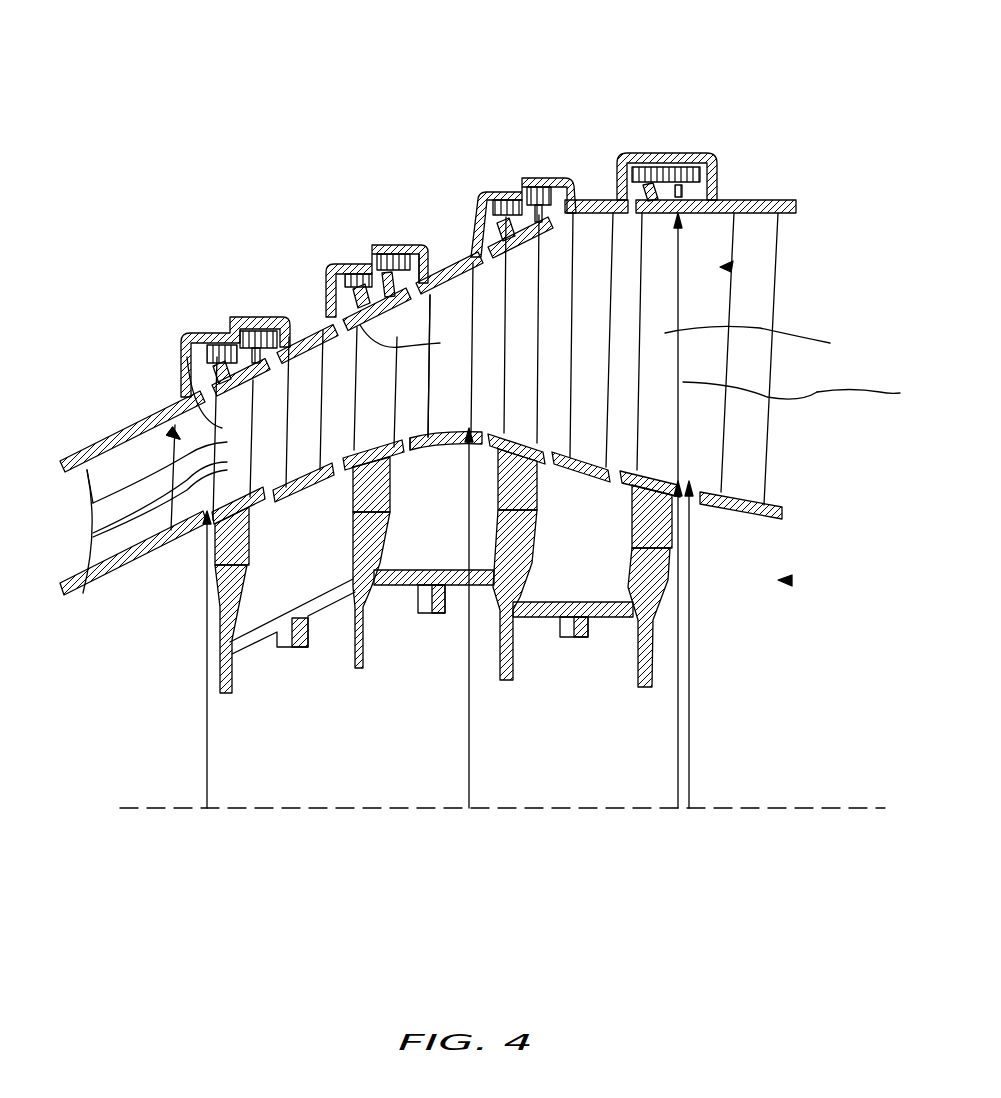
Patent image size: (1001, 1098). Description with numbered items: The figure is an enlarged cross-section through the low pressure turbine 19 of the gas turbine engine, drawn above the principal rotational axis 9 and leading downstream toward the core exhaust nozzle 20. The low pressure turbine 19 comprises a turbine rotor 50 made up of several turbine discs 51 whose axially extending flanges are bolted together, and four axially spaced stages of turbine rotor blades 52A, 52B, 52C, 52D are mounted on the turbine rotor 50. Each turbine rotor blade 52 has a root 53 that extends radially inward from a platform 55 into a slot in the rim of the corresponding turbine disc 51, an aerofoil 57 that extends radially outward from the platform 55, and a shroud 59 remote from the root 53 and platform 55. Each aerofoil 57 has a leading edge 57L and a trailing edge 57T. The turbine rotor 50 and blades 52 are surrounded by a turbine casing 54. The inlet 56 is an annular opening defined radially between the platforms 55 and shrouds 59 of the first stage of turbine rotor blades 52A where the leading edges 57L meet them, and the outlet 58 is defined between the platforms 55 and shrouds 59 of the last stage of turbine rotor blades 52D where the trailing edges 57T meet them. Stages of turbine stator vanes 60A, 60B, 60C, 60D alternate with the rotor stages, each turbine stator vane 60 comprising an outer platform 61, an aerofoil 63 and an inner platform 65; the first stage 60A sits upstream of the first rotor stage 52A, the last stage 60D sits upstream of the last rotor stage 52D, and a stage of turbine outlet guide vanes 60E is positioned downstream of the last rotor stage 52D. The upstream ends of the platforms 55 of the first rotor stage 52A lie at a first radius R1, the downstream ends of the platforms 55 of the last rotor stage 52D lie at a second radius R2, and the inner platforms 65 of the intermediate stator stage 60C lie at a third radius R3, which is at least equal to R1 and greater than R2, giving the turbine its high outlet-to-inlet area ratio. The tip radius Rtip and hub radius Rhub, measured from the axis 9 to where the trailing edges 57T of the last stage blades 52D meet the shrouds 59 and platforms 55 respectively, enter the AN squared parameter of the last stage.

The principal rotational axis 9 is at (866, 808).
The low pressure turbine 19 is at (780, 580).
The core exhaust nozzle 20 is at (900, 393).
The turbine rotor 50 is at (678, 590).
The turbine disc 51 is at (233, 680).
The turbine rotor blade 52 is at (97, 539).
The first stage of turbine rotor blades 52A is at (390, 235).
The second stage of turbine rotor blades 52B is at (439, 375).
The third stage of turbine rotor blades 52C is at (523, 263).
The last stage of turbine rotor blades 52D is at (748, 153).
The root 53 is at (247, 552).
The turbine casing 54 is at (717, 183).
The platform 55 is at (168, 518).
The inlet 56 is at (172, 432).
The aerofoil 57 is at (93, 510).
The leading edge 57L is at (173, 425).
The trailing edge 57T is at (800, 403).
The outlet 58 is at (722, 267).
The shroud 59 is at (185, 355).
The turbine stator vane 60 is at (345, 285).
The first stage of turbine stator vanes 60A is at (93, 460).
The second stage of turbine stator vanes 60B is at (283, 362).
The intermediate stage of turbine stator vanes 60C is at (457, 287).
The last stage of turbine stator vanes 60D is at (588, 223).
The turbine outlet guide vanes 60E is at (763, 365).
The outer platform 61 is at (433, 243).
The aerofoil 63 is at (440, 398).
The inner platform 65 is at (426, 455).
The first radius R1 is at (208, 750).
The second radius R2 is at (690, 706).
The third radius R3 is at (470, 722).
The tip radius Rtip is at (680, 236).
The hub radius Rhub is at (676, 775).